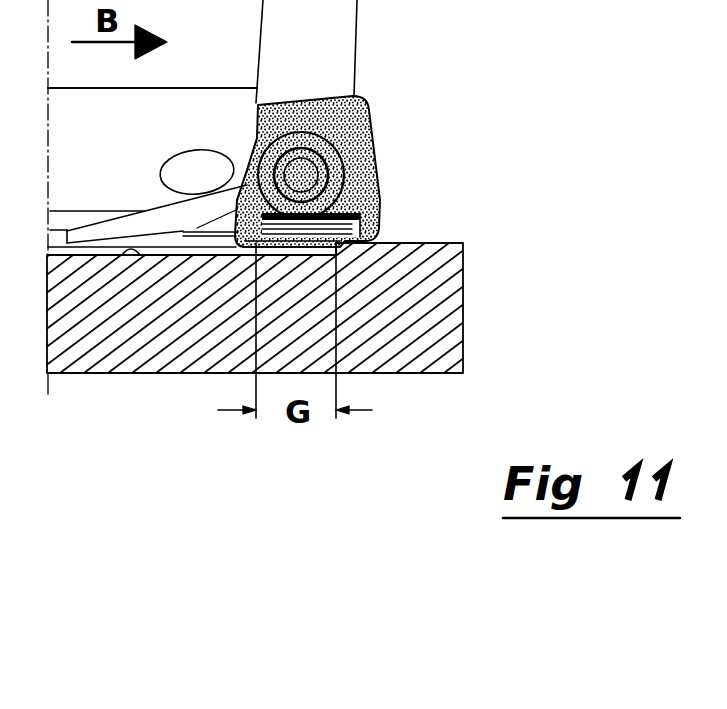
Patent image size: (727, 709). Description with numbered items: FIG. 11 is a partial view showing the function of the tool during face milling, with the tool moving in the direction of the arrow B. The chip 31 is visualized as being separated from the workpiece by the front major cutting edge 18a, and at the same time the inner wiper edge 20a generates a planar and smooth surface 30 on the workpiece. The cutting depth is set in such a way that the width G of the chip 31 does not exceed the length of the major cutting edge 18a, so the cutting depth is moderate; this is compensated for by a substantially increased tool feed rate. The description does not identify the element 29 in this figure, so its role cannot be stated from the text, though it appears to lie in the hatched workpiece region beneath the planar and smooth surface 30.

The inner wiper edge 20a is at (210, 268).
The base member 29 is at (170, 380).
The planar and smooth surface 30 is at (140, 255).
The front major cutting edge 18a is at (340, 243).
The chip 31 is at (343, 190).